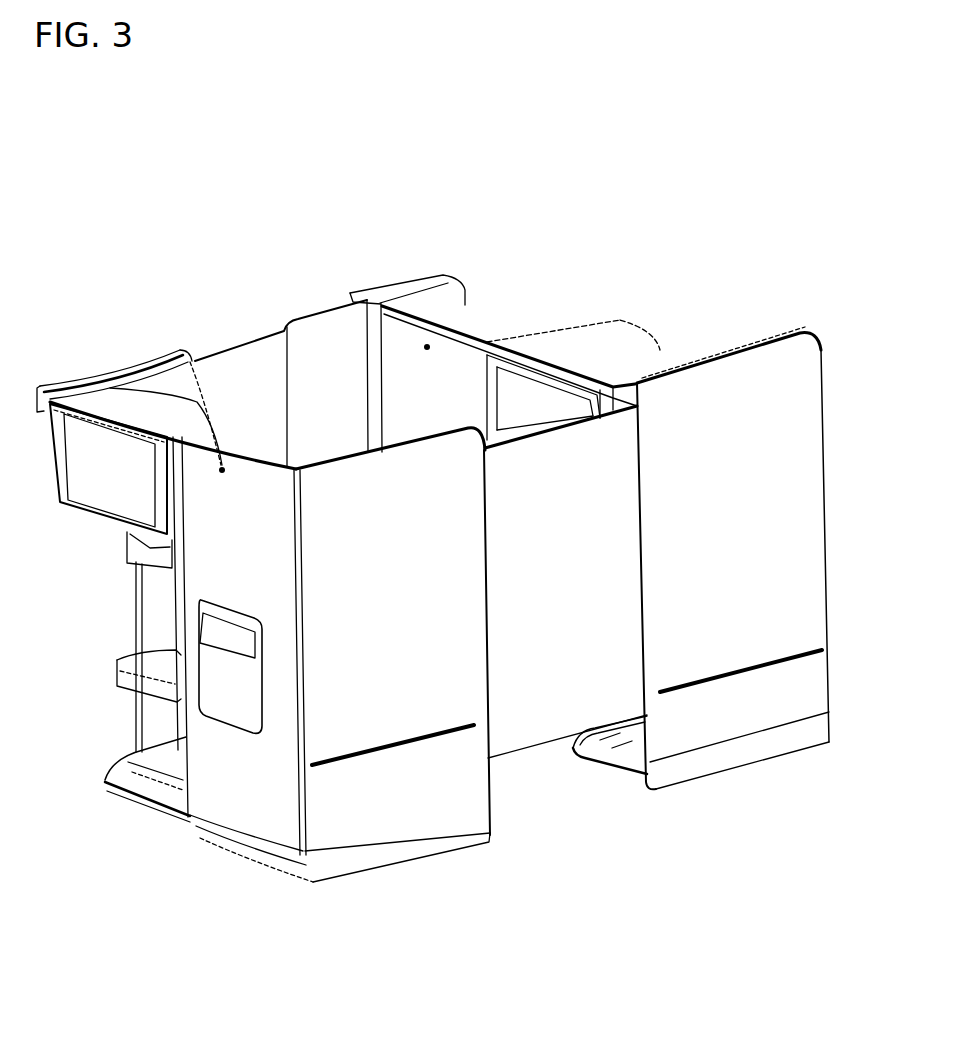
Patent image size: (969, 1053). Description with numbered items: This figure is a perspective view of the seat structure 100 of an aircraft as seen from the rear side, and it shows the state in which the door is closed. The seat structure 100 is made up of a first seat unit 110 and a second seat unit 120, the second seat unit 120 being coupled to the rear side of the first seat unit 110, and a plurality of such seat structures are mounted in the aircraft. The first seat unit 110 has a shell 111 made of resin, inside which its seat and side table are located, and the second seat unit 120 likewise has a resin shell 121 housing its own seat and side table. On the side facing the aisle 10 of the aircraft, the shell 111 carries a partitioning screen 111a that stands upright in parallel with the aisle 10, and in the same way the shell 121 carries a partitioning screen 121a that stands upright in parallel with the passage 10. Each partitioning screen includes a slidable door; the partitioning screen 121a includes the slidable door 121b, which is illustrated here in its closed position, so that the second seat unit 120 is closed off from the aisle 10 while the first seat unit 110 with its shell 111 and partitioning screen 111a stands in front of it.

The seat structure 100 is at (461, 257).
The first seat unit 110 is at (690, 350).
The shell 111 is at (605, 362).
The partitioning screen 111a is at (727, 625).
The second seat unit 120 is at (262, 406).
The shell 121 is at (120, 410).
The partitioning screen 121a is at (387, 703).
The door 121b is at (518, 734).
The aisle 10 is at (644, 881).